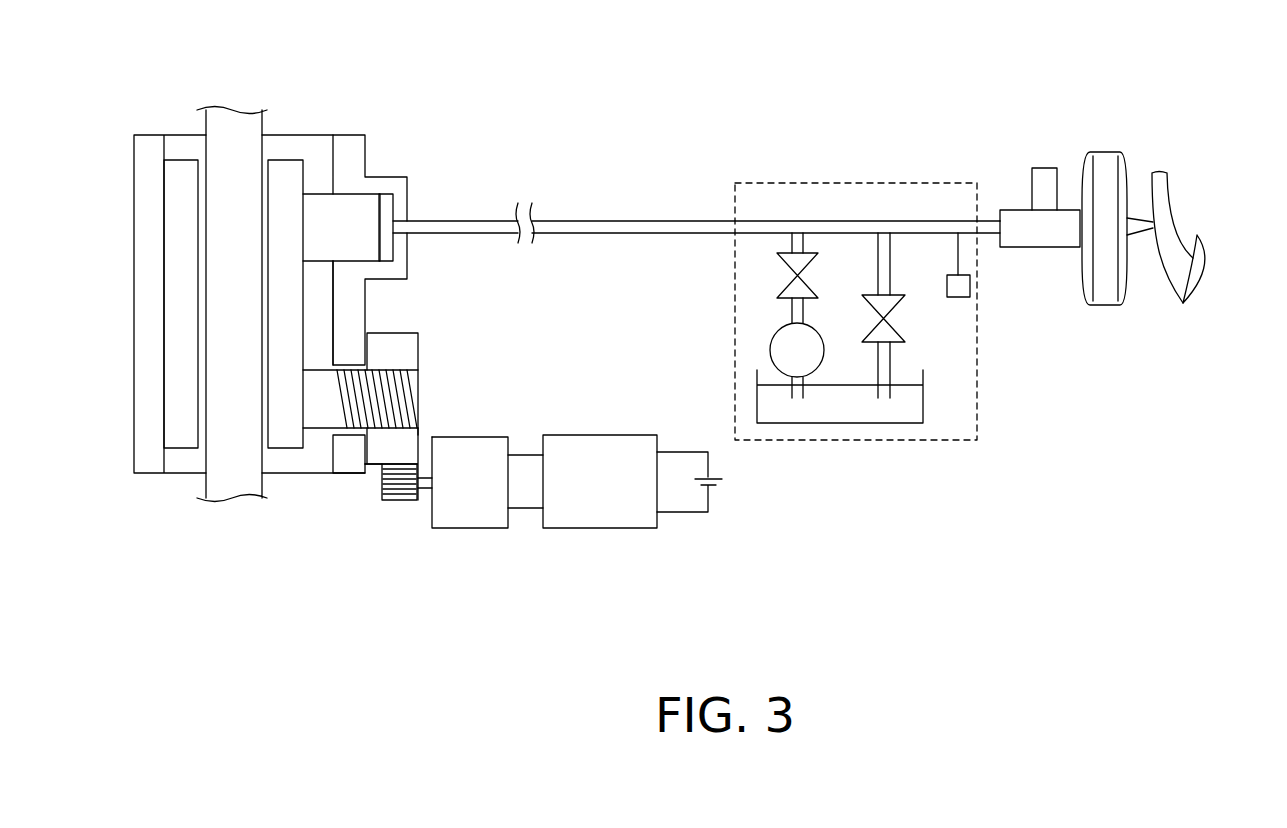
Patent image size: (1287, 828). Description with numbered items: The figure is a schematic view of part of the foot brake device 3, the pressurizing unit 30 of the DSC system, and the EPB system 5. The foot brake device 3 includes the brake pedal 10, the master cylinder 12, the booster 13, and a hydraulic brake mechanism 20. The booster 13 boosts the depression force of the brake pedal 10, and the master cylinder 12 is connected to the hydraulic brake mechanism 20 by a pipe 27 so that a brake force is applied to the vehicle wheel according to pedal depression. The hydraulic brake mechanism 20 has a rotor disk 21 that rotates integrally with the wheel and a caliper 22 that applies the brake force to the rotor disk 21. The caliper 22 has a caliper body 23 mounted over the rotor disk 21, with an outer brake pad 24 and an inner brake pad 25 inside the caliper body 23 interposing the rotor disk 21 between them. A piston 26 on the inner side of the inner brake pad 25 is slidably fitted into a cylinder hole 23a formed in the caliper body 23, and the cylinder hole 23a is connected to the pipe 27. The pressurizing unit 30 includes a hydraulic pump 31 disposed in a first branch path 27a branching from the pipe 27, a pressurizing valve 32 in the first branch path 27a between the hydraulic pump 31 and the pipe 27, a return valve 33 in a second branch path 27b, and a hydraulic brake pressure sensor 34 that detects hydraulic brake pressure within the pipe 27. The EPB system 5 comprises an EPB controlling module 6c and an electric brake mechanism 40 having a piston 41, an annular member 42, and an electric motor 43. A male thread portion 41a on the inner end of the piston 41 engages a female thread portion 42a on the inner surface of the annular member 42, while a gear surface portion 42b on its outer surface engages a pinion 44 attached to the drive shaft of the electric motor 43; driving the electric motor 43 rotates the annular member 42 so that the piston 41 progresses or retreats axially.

The foot brake device 3 is at (1118, 102).
The brake pedal 10 is at (1208, 273).
The master cylinder 12 is at (1045, 247).
The booster 13 is at (1107, 152).
The hydraulic brake mechanism 20 is at (367, 95).
The rotor disk 21 is at (230, 118).
The caliper 22 is at (345, 133).
The caliper body 23 is at (367, 308).
The cylinder hole 23a is at (360, 200).
The outer brake pad 24 is at (175, 450).
The inner brake pad 25 is at (285, 450).
The piston 26 is at (373, 207).
The pipe 27 is at (602, 234).
The first branch path 27a is at (790, 313).
The second branch path 27b is at (890, 255).
The pressurizing unit 30 is at (840, 181).
The hydraulic pump 31 is at (772, 347).
The pressurizing valve 32 is at (778, 268).
The return valve 33 is at (890, 320).
The hydraulic brake pressure sensor 34 is at (970, 290).
The electric brake mechanism 40 is at (477, 402).
The piston 41 is at (317, 440).
The male thread portion 41a is at (417, 435).
The annular member 42 is at (400, 330).
The female thread portion 42a is at (395, 380).
The gear surface portion 42b is at (373, 467).
The electric motor 43 is at (465, 528).
The pinion 44 is at (398, 500).
The EPB system 5 is at (550, 582).
The EPB controlling module 6c is at (590, 528).